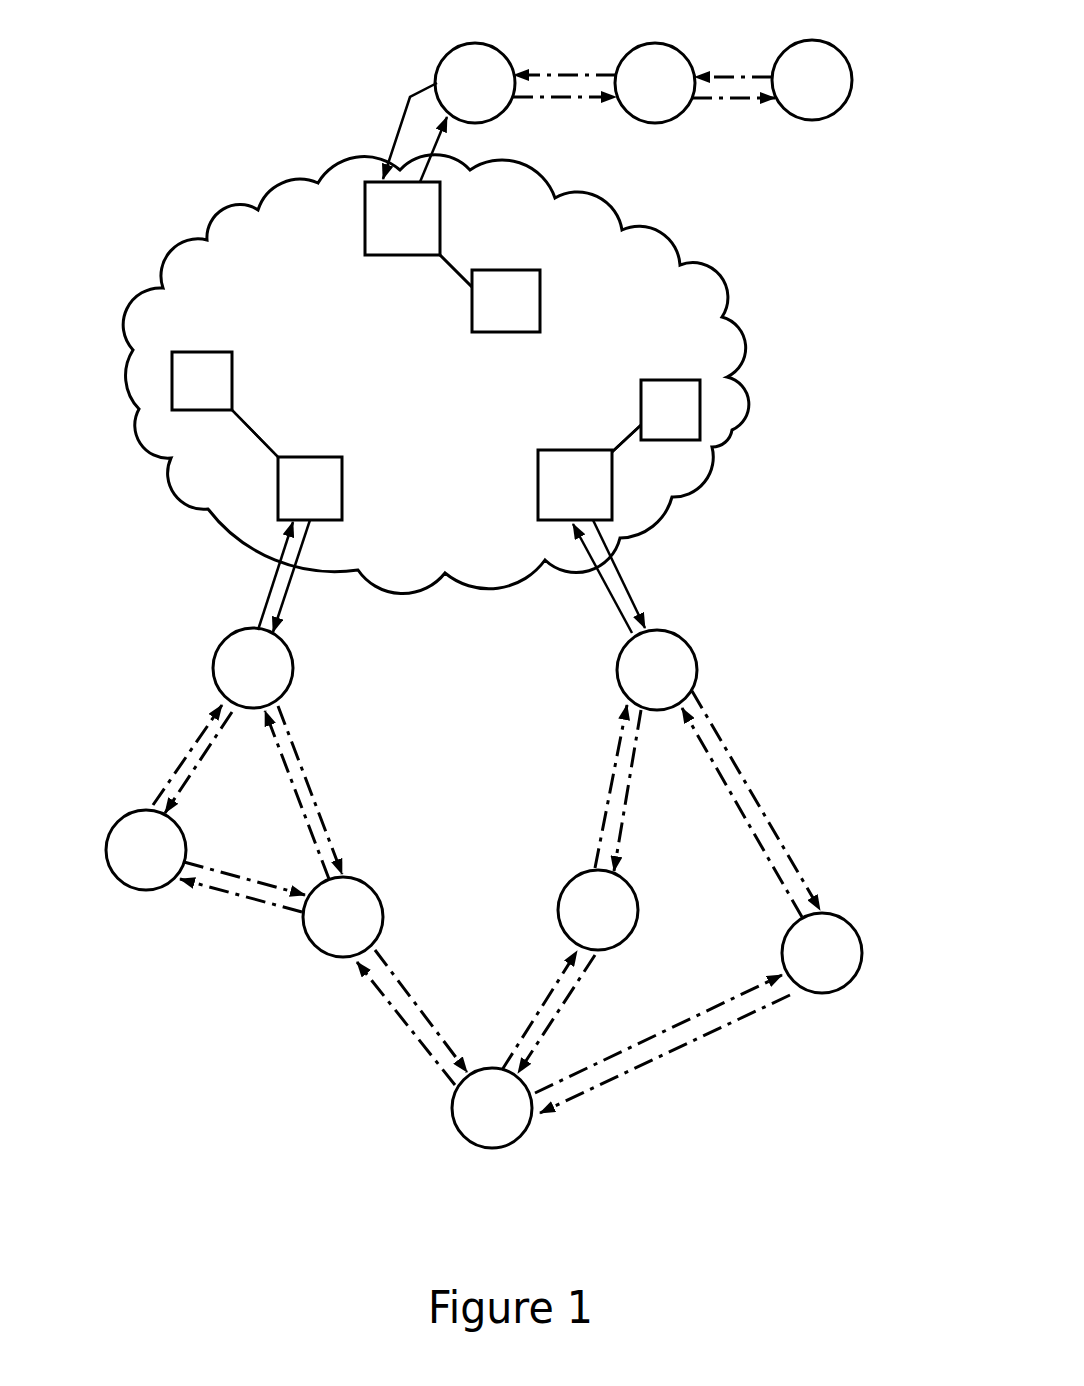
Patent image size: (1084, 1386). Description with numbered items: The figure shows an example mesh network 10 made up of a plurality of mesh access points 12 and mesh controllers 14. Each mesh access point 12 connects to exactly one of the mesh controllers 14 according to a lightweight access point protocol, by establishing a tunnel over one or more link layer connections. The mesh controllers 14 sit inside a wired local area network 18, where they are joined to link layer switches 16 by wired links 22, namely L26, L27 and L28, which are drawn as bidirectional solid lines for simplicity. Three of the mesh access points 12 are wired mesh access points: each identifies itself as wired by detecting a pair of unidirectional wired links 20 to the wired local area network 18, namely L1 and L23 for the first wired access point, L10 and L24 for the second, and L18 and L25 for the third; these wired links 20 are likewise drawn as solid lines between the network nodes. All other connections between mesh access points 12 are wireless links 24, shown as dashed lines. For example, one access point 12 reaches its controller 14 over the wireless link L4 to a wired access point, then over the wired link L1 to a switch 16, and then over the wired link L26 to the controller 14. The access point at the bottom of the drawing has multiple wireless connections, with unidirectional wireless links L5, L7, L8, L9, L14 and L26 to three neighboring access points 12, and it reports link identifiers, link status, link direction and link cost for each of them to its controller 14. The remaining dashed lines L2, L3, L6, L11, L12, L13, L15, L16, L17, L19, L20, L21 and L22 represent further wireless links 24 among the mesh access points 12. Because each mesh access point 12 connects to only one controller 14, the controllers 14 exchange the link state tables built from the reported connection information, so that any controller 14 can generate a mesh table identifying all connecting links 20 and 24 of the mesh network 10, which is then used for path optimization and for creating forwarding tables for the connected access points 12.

The mesh network 10 is at (801, 1089).
The mesh access point 12 is at (460, 43).
The mesh controller 14 is at (517, 270).
The switch 16 is at (365, 220).
The wired local area network 18 is at (237, 227).
The wired link 20 is at (426, 356).
The wired link 22 is at (463, 262).
The wireless link 24 is at (471, 902).
The wired link L1 is at (608, 590).
The link L2 is at (750, 785).
The link L3 is at (632, 785).
The wireless link L4 is at (752, 832).
The wireless link L5 is at (660, 1057).
The link L6 is at (610, 770).
The wireless link L7 is at (562, 1000).
The wireless link L8 is at (556, 988).
The wireless link L9 is at (400, 1026).
The wired link L10 is at (268, 600).
The link L11 is at (300, 744).
The link L12 is at (195, 778).
The link L13 is at (292, 783).
The wireless link L14 is at (397, 978).
The link L15 is at (255, 905).
The link L16 is at (205, 728).
The link L17 is at (228, 874).
The wired link L18 is at (405, 108).
The link L19 is at (555, 99).
The link L20 is at (595, 75).
The link L21 is at (738, 99).
The link L22 is at (740, 76).
The wired link L23 is at (630, 590).
The wired link L24 is at (290, 590).
The wired link L25 is at (430, 165).
The wired link L26 is at (622, 448).
The wired link L27 is at (262, 445).
The wired link L28 is at (448, 268).